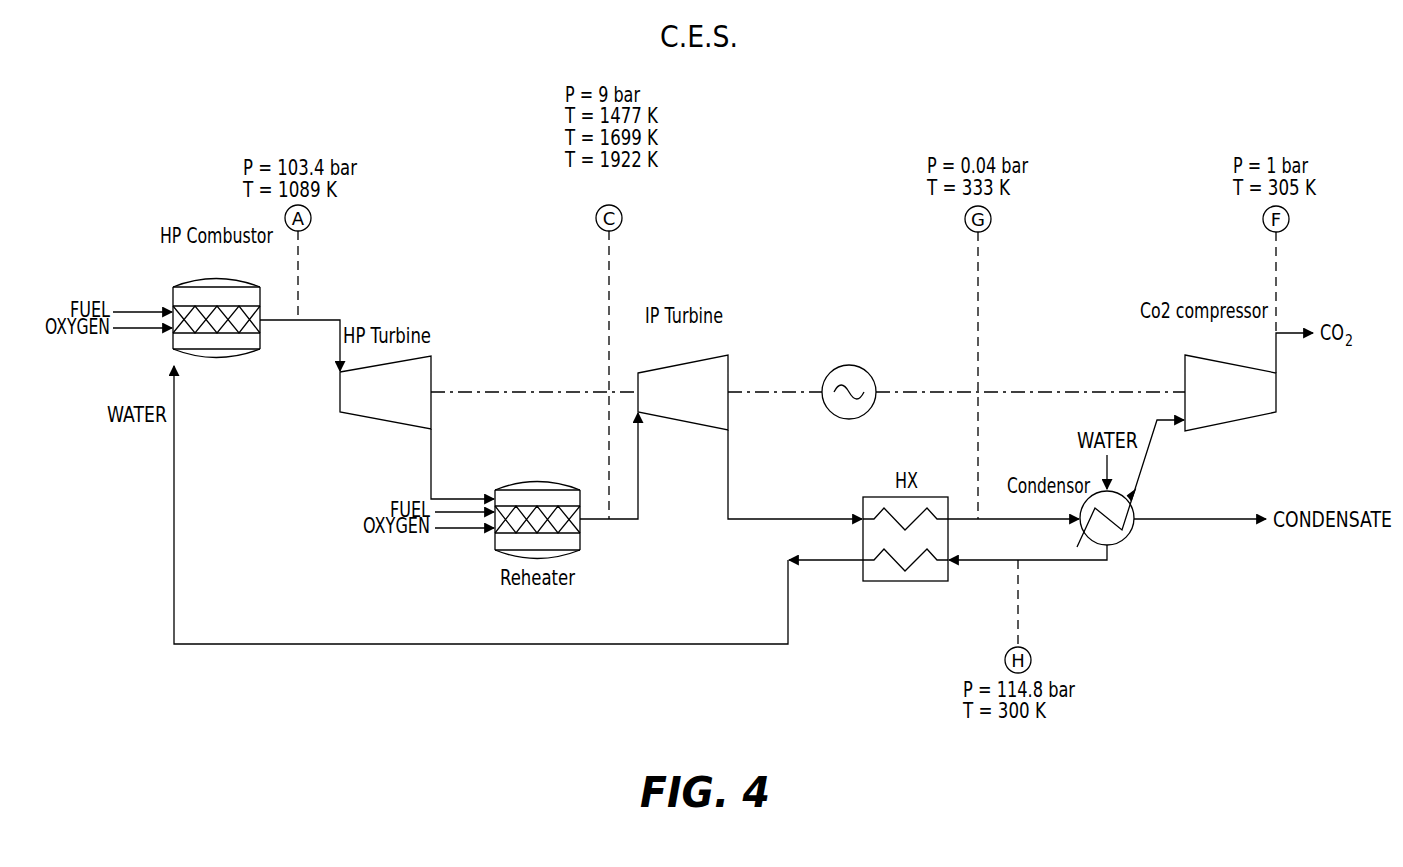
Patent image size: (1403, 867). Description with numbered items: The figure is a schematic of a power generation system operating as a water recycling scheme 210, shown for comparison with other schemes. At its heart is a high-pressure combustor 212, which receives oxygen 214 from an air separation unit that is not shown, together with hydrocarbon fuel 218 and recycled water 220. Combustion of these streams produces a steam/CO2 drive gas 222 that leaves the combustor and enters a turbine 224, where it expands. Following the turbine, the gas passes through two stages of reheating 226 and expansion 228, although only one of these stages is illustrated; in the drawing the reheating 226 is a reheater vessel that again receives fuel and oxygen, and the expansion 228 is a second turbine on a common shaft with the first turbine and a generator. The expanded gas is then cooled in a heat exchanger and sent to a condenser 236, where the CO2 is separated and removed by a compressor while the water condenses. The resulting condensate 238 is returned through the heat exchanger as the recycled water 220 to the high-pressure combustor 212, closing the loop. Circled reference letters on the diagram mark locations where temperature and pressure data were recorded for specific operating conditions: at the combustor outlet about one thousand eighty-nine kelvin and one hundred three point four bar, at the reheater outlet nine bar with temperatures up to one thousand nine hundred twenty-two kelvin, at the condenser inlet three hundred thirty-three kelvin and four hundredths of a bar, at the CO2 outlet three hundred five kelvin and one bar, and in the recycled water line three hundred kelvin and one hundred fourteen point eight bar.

The water recycling scheme 210 is at (361, 681).
The high-pressure combustor 212 is at (186, 279).
The oxygen 214 is at (143, 335).
The hydrocarbon fuel 218 is at (143, 311).
The recycled water 220 is at (174, 535).
The steam/CO2 drive gas 222 is at (320, 320).
The turbine 224 is at (375, 422).
The reheating 226 is at (500, 560).
The expansion 228 is at (707, 354).
The condenser 236 is at (1128, 538).
The condensate 238 is at (1213, 519).